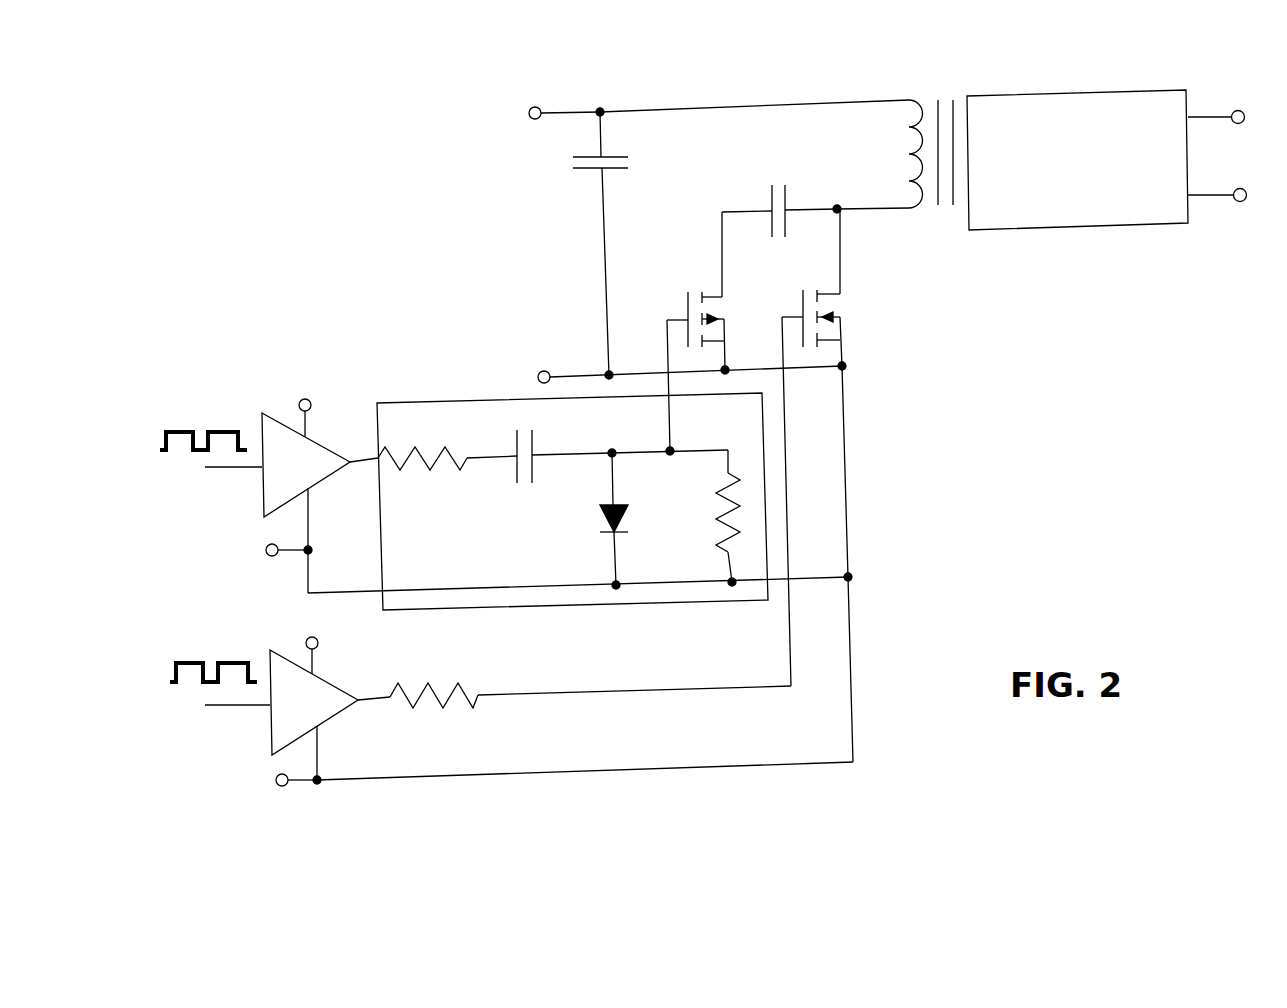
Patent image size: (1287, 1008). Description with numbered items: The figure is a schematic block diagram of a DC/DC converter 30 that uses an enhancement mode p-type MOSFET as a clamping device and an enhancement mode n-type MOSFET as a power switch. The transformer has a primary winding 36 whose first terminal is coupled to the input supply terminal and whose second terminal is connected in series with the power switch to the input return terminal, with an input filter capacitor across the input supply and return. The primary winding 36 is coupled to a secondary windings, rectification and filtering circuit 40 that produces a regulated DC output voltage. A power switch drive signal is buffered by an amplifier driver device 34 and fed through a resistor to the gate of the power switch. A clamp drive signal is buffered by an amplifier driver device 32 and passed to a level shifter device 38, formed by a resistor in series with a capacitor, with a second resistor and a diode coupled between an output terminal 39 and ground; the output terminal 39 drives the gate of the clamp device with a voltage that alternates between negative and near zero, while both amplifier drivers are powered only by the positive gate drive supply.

The DC/DC converter 30 is at (353, 155).
The amplifier driver device 32 is at (316, 443).
The amplifier driver device 34 is at (328, 678).
The primary winding 36 is at (888, 154).
The level shifter device 38 is at (450, 403).
The output terminal 39 is at (692, 433).
The secondary windings, rectification and filtering circuit 40 is at (1070, 93).